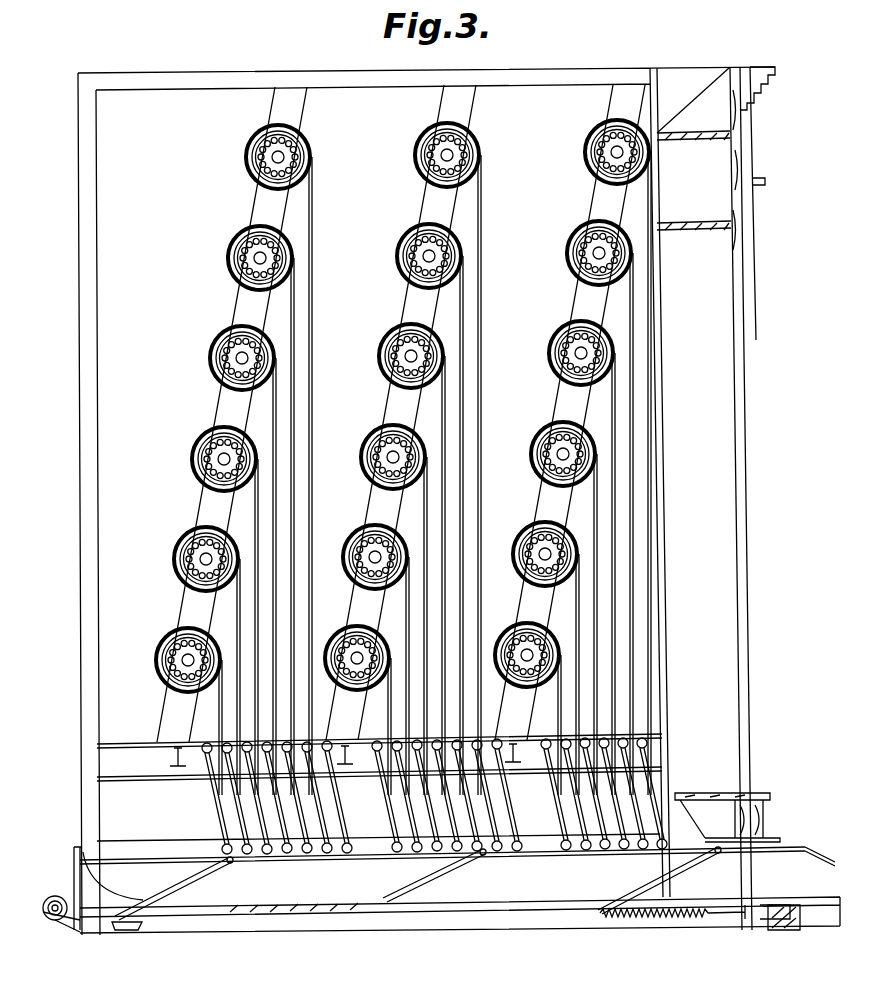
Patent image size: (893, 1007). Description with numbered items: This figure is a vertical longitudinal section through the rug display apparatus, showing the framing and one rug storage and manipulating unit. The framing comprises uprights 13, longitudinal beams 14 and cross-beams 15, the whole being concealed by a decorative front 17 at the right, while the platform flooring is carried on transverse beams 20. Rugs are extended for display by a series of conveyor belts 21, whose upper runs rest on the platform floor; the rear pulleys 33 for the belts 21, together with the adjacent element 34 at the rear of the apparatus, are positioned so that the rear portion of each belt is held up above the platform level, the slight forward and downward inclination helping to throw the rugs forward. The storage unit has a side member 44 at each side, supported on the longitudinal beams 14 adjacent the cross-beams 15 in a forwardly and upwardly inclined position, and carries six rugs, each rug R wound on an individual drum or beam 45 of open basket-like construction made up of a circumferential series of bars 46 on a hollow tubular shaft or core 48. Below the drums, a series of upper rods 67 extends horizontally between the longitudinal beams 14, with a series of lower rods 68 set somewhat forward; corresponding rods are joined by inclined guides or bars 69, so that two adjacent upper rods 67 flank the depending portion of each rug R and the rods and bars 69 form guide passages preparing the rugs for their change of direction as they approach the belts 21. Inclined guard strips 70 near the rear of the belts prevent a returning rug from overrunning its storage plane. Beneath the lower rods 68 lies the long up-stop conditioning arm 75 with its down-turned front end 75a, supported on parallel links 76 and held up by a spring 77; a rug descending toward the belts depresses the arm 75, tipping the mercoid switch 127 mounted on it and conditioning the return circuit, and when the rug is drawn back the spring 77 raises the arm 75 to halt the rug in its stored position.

The uprights 13 is at (80, 190).
The longitudinal beams 14 is at (408, 78).
The cross-beams 15 is at (172, 760).
The decorative front 17 is at (745, 298).
The transverse beams 20 is at (782, 925).
The conveyors or belts 21 is at (200, 905).
The rear pulleys 33 is at (48, 900).
The pulley bracket 34 is at (55, 917).
The side member 44 is at (252, 216).
The drum or beam 45 is at (268, 150).
The bars 46 is at (258, 162).
The hollow tubular shaft or core 48 is at (272, 163).
The rug R is at (313, 345).
The upper rods 67 is at (218, 742).
The lower rods 68 is at (250, 855).
The inclined guides or bars 69 is at (230, 812).
The inclined guard strips 70 is at (105, 892).
The up-stop conditioning arm 75 is at (378, 857).
The down-turned front end 75a is at (822, 857).
The parallel links 76 is at (190, 880).
The spring 77 is at (650, 918).
The mercoid switch 127 is at (128, 930).